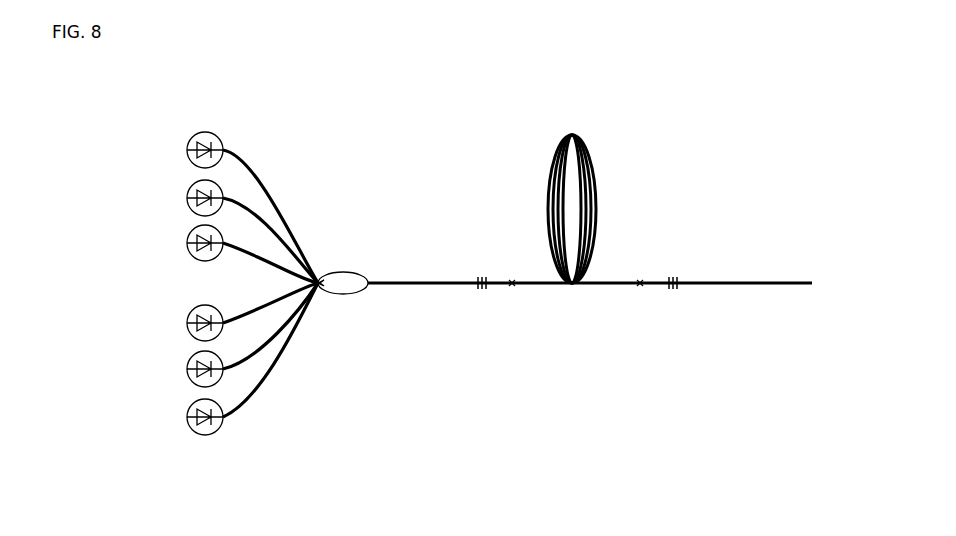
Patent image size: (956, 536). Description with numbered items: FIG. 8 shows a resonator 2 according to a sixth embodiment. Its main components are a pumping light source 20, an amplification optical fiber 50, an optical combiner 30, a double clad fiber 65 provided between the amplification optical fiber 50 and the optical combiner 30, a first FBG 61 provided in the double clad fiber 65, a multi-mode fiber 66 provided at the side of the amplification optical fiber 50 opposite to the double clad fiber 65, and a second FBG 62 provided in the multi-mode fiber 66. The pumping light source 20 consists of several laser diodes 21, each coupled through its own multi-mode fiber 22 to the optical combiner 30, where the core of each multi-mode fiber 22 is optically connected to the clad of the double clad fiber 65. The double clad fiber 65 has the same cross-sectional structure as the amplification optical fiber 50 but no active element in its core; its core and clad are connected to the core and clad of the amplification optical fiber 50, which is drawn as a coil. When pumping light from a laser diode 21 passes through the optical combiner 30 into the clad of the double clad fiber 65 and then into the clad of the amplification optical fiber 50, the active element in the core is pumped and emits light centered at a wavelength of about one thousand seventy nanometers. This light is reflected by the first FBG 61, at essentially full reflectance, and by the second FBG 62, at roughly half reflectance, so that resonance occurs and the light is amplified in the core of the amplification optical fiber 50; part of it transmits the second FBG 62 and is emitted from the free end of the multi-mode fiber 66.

The resonator 2 is at (697, 116).
The pumping light source 20 is at (116, 215).
The laser diode 21 is at (190, 160).
The multi-mode fiber 22 is at (252, 245).
The optical combiner 30 is at (350, 290).
The amplification optical fiber 50 is at (594, 283).
The first FBG 61 is at (484, 292).
The second FBG 62 is at (676, 292).
The double clad fiber 65 is at (400, 283).
The multi-mode fiber 66 is at (710, 283).